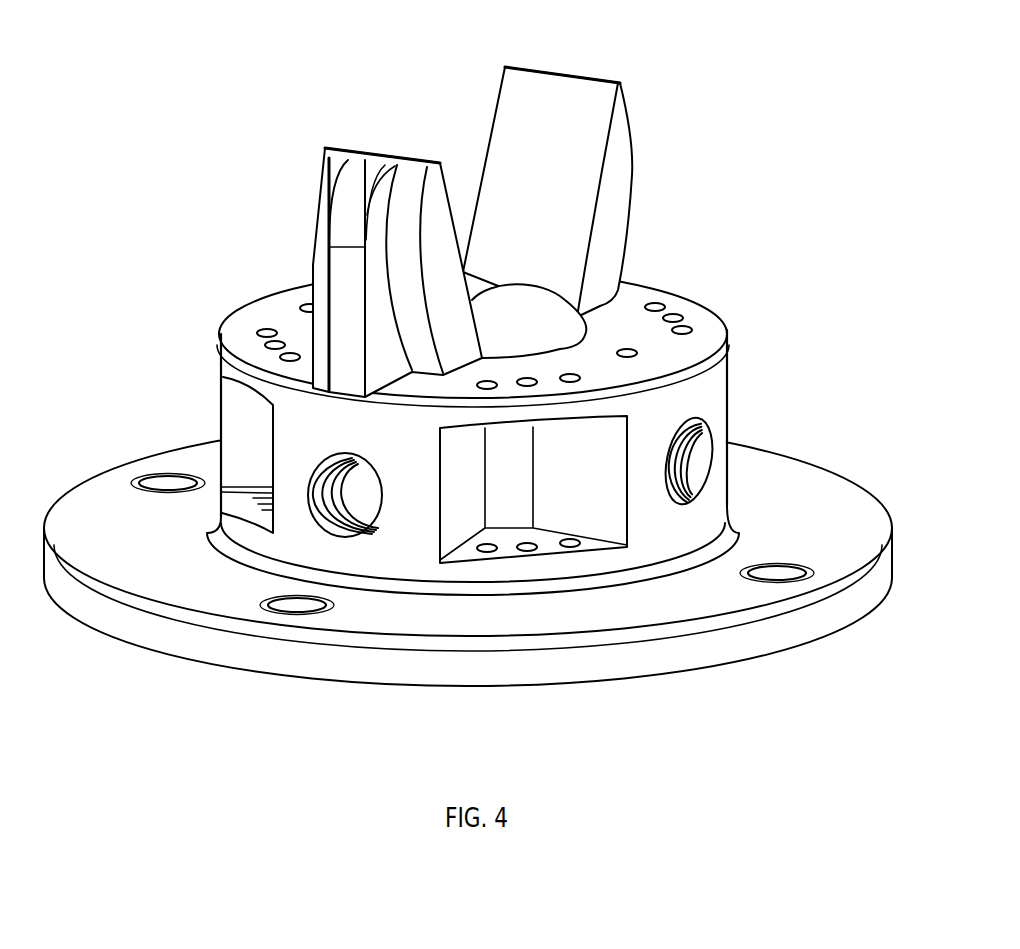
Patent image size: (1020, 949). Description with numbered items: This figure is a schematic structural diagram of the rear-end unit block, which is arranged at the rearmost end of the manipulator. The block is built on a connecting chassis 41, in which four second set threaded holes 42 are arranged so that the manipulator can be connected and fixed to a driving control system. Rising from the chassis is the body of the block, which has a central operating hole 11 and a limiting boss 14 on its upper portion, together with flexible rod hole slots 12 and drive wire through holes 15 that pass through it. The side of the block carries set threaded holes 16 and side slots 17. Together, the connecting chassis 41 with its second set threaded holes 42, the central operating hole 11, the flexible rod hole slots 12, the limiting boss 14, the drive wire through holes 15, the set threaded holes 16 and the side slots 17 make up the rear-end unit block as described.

The central operating hole 11 is at (507, 340).
The flexible rod hole slots 12 is at (630, 350).
The limiting boss 14 is at (547, 192).
The drive wire through holes 15 is at (255, 337).
The set threaded holes 16 is at (703, 445).
The side slots 17 is at (587, 492).
The connecting chassis 41 is at (208, 572).
The second set threaded holes 42 is at (297, 604).